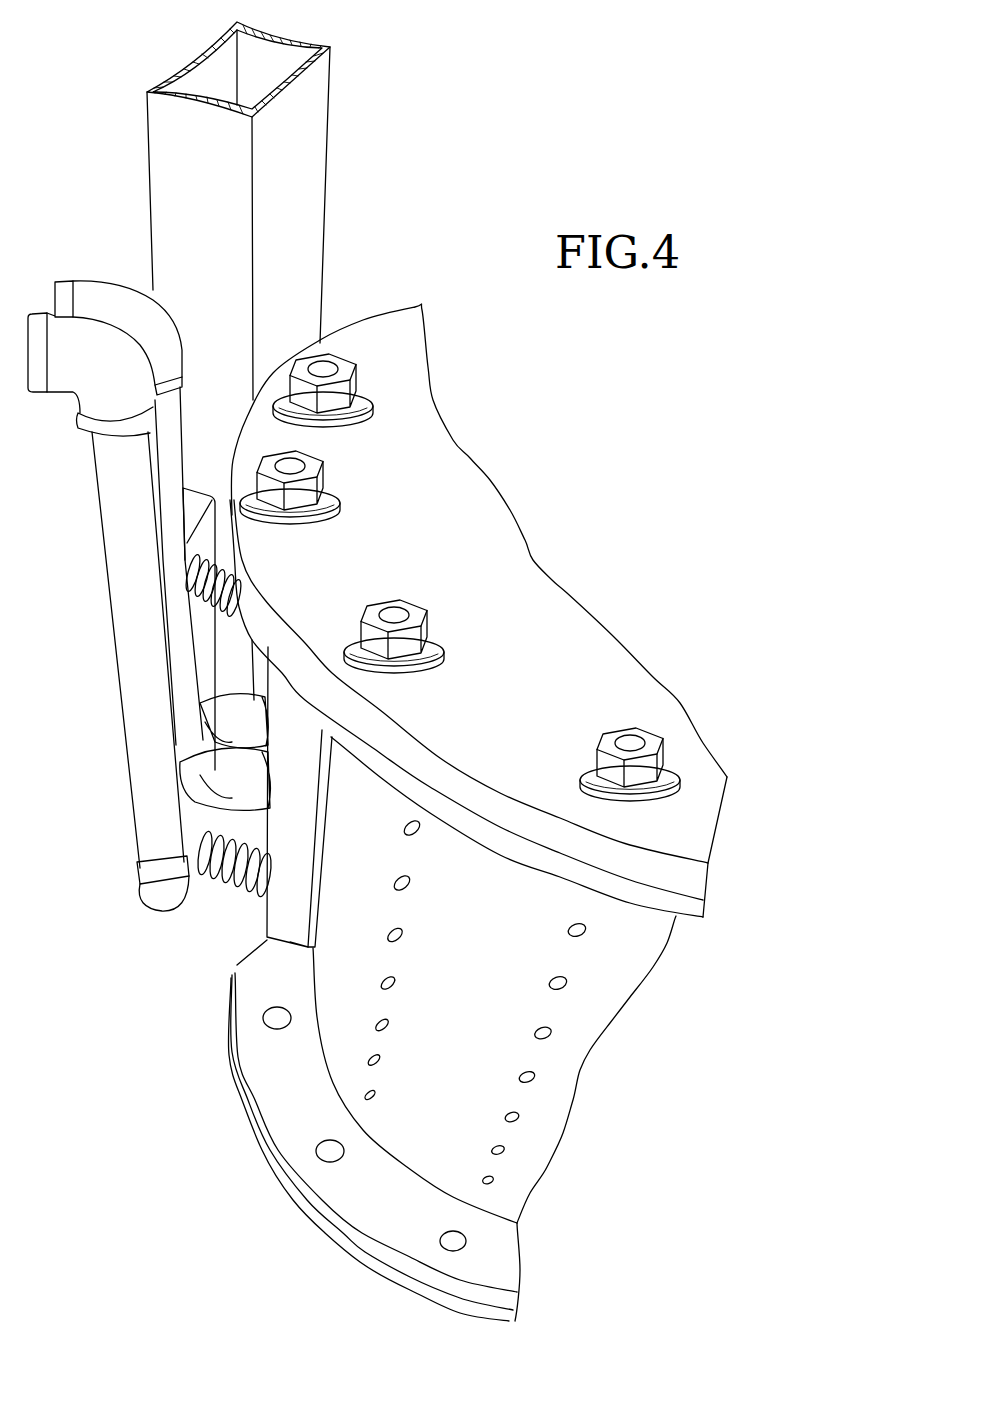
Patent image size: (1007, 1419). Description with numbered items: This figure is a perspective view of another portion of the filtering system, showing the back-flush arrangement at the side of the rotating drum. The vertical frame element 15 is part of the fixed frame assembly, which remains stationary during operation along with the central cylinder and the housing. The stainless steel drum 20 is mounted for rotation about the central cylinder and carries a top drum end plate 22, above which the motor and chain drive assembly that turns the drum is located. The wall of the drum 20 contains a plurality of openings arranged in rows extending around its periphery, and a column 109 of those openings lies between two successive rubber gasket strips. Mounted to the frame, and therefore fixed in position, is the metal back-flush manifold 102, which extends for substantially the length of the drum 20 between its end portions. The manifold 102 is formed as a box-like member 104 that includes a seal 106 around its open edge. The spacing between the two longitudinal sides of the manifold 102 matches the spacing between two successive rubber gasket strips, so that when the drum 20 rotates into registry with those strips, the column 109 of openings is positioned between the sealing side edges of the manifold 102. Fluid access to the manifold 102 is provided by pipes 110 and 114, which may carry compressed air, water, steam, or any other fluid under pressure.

The vertical frame element 15 is at (315, 212).
The drum 20 is at (620, 1065).
The top drum end plate 22 is at (568, 618).
The back-flush manifold 102 is at (244, 913).
The box-like member 104 is at (283, 933).
The seal 106 is at (325, 817).
The column of drum openings 109 is at (451, 838).
The pipe 110 is at (123, 578).
The pipe 114 is at (163, 458).